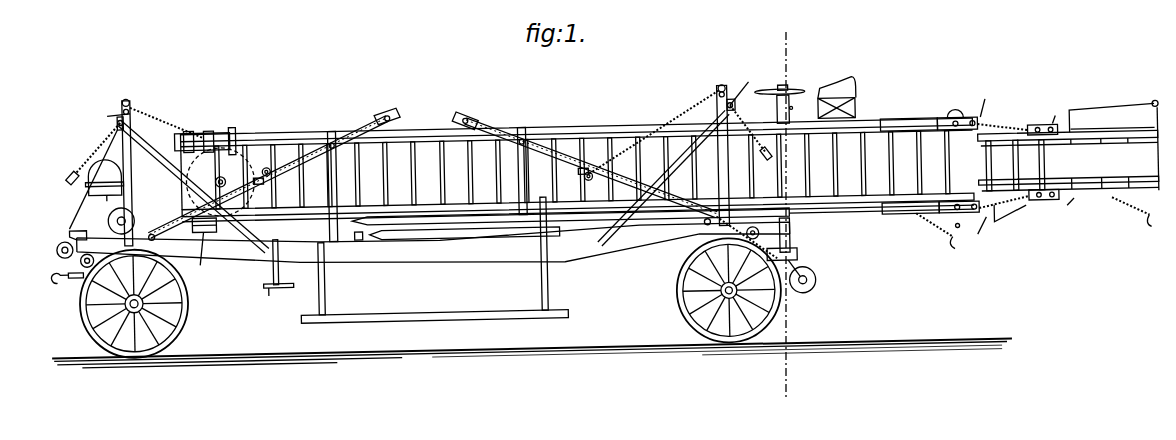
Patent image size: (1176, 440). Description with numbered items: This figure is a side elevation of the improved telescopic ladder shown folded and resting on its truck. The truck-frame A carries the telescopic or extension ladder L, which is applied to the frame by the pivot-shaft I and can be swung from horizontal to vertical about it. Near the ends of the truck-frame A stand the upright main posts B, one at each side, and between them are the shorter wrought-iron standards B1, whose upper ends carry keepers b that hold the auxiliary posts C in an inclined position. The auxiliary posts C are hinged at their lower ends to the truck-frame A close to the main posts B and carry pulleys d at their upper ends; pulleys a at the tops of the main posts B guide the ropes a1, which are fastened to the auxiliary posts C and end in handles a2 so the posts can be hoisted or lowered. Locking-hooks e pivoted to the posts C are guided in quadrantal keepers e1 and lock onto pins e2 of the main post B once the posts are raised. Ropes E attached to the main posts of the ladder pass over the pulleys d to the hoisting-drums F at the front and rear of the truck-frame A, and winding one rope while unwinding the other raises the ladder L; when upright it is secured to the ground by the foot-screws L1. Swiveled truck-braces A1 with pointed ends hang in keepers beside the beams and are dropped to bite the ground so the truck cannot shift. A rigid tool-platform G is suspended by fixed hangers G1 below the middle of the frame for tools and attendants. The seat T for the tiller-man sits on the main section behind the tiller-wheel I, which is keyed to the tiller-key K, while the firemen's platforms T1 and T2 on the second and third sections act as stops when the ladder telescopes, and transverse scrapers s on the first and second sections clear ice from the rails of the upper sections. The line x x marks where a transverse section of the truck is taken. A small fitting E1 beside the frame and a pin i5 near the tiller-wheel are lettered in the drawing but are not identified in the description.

The truck-frame A is at (428, 199).
The swiveled truck-braces A1 is at (565, 237).
The upright main posts B is at (411, 166).
The standards B1 is at (440, 184).
The auxiliary posts C is at (432, 173).
The ropes E is at (425, 175).
The latch box E1 is at (204, 248).
The hoisting-drums F is at (438, 267).
The tool-platform G is at (435, 327).
The fixed hangers G1 is at (421, 256).
The tiller-wheel I is at (779, 93).
The pin i5 is at (796, 114).
The tiller-key K is at (766, 237).
The telescopic ladder L is at (579, 169).
The foot-screws L1 is at (202, 170).
The seat T is at (849, 97).
The firemen's platform T1 is at (1034, 222).
The firemen's platform T2 is at (1068, 153).
The pulleys a is at (423, 93).
The ropes a1 is at (420, 137).
The handles a2 is at (417, 164).
The keepers b is at (435, 148).
The pulleys d is at (426, 111).
The locking-hooks e is at (427, 169).
The quadrantal keepers e1 is at (434, 181).
The pins e2 is at (423, 94).
The transverse scrapers s is at (1021, 166).
The section line x is at (786, 214).